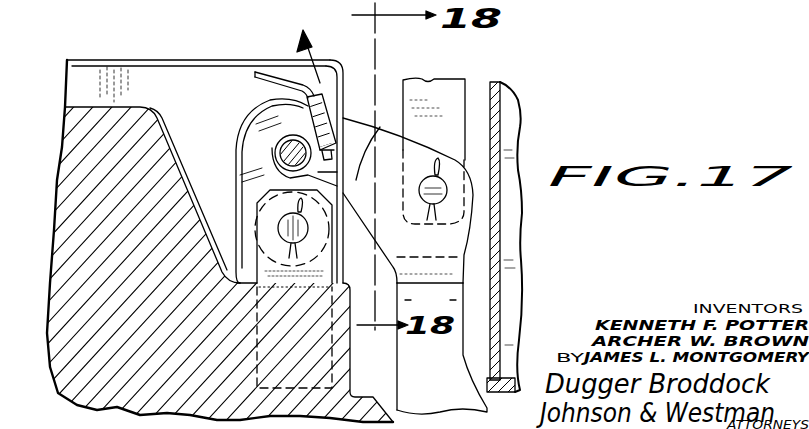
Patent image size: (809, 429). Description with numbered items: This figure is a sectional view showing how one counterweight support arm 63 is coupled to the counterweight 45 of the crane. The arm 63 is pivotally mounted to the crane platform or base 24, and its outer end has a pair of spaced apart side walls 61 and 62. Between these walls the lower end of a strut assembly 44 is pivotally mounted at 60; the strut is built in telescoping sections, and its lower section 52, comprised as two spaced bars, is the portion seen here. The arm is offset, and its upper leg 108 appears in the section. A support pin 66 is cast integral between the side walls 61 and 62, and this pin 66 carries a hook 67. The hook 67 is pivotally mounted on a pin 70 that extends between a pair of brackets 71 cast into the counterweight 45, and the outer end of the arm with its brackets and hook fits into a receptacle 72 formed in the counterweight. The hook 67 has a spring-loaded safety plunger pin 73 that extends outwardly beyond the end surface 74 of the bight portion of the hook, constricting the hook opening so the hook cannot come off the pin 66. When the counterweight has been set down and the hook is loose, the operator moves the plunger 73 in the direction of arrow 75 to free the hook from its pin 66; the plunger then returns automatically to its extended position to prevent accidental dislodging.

The counterweight 45 is at (103, 67).
The receptacle 72 is at (190, 100).
The arrow 75 is at (322, 67).
The safety plunger pin 73 is at (302, 66).
The hook 67 is at (246, 128).
The support pin 66 is at (291, 152).
The end surface 74 is at (350, 190).
The pin 70 is at (283, 222).
The bracket 71 is at (255, 265).
The side wall 61 is at (352, 133).
The support arm 63 is at (396, 340).
The strut assembly 44 is at (426, 104).
The pivot 60 is at (440, 190).
The side wall 62 is at (457, 233).
The upper leg 108 is at (430, 296).
The platform 24 is at (492, 101).
The lower section 52 is at (452, 134).